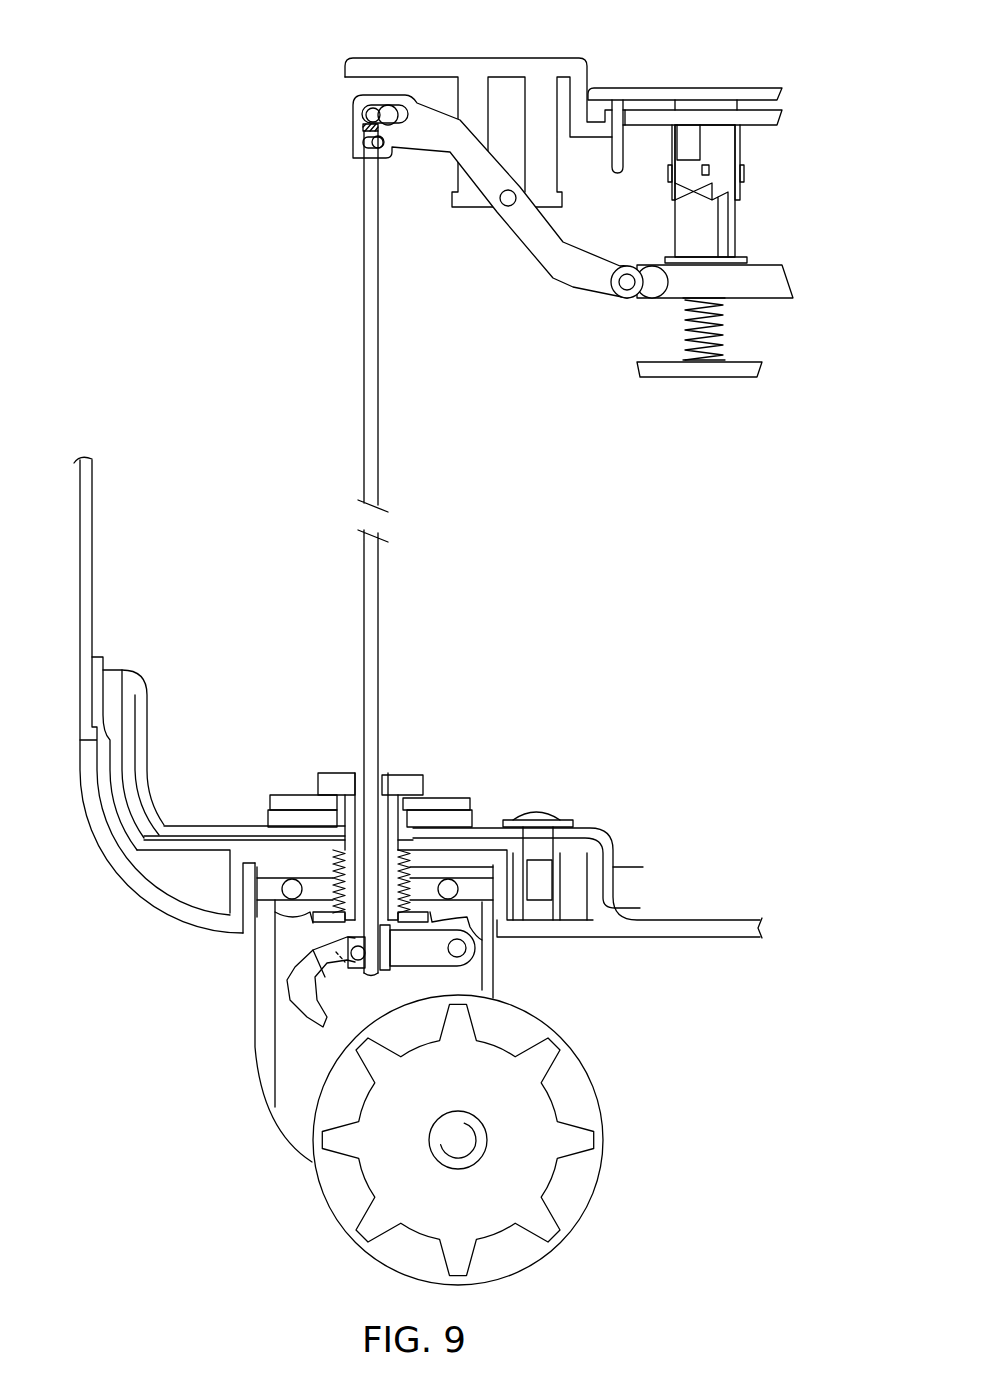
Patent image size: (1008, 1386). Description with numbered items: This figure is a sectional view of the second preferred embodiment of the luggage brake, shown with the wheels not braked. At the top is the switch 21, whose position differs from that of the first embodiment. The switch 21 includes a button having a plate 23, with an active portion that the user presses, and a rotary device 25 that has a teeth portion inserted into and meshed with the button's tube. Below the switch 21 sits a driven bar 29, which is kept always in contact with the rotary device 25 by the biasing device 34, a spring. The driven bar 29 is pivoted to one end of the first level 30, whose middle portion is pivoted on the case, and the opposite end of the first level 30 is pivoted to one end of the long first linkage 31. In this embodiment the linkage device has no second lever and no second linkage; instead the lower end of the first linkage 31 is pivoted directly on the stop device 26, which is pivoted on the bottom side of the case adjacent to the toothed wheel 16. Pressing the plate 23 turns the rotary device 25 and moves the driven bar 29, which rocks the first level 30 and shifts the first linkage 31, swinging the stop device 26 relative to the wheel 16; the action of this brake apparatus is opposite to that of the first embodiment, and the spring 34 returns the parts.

The wheel 16 is at (612, 1124).
The switch 21 is at (757, 153).
The plate 23 is at (643, 92).
The rotary device 25 is at (733, 237).
The stop device 26 is at (297, 983).
The driven bar 29 is at (767, 287).
The first level 30 is at (543, 247).
The first linkage 31 is at (370, 574).
The biasing device 34 is at (678, 319).